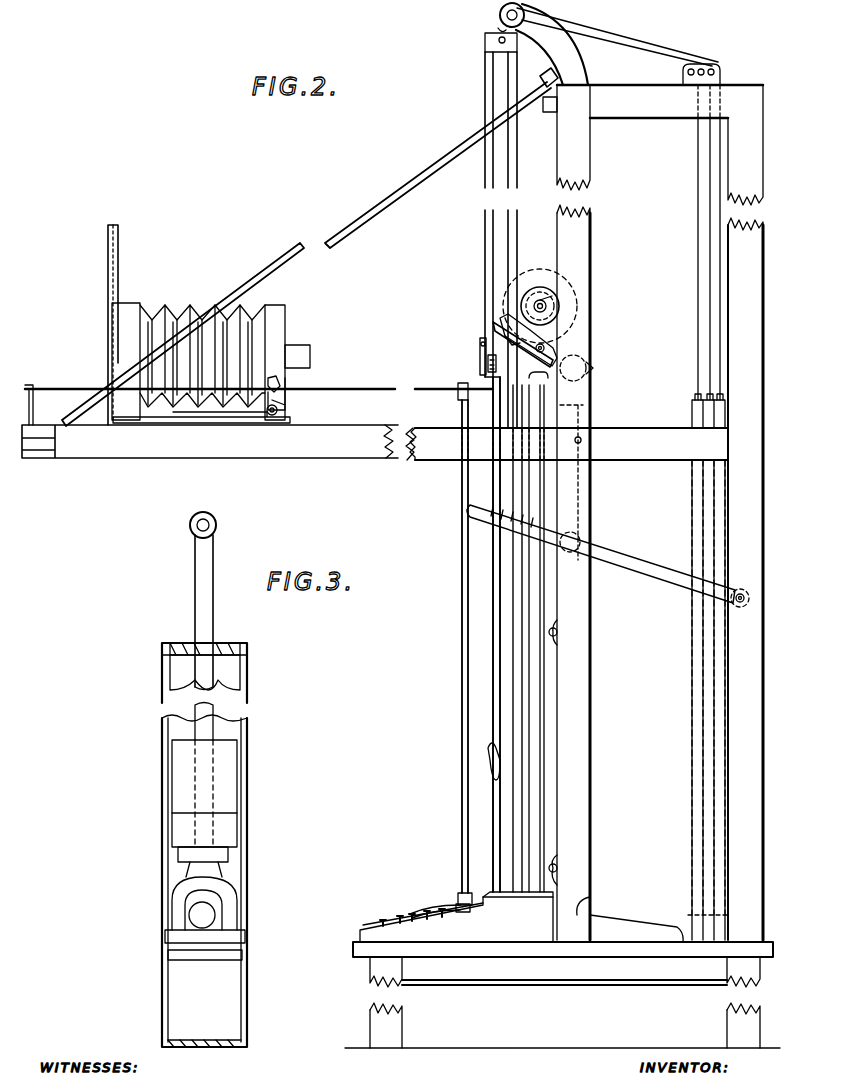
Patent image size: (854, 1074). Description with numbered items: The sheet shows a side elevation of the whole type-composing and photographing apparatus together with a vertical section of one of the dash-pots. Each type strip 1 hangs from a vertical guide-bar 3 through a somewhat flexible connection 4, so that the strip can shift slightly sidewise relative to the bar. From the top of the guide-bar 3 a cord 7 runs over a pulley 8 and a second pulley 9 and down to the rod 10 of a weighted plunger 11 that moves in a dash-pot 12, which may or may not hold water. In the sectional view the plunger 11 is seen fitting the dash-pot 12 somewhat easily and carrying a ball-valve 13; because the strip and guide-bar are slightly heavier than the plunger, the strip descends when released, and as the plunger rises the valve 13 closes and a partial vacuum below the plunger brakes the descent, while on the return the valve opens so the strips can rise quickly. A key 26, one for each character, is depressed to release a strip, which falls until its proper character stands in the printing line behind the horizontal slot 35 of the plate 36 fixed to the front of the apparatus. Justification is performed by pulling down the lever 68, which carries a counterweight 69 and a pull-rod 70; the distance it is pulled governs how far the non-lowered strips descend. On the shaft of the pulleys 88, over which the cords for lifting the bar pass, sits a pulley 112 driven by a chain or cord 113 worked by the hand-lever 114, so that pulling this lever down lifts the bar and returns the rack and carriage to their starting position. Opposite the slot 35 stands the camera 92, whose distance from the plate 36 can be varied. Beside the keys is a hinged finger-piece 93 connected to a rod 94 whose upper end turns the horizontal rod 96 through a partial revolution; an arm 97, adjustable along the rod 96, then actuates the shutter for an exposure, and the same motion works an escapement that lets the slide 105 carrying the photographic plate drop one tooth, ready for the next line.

In FIG. 2, the strip 1 is at (485, 90).
In FIG. 2, the guide-bar 3 is at (310, 247).
In FIG. 2, the connection 4 is at (499, 32).
In FIG. 2, the cord 7 is at (572, 36).
In FIG. 2, the pulley 8 is at (544, 42).
In FIG. 2, the pulley 9 is at (716, 70).
In FIG. 2, the rod 10 is at (692, 402).
In FIG. 3, the rod 10 is at (210, 610).
In FIG. 3, the weighted plunger 11 is at (246, 928).
In FIG. 2, the dash-pot 12 is at (702, 715).
In FIG. 3, the dash-pot 12 is at (242, 765).
In FIG. 3, the ball-valve 13 is at (204, 896).
In FIG. 2, the key 26 is at (400, 915).
In FIG. 2, the slot 35 is at (488, 362).
In FIG. 2, the plate 36 is at (481, 343).
In FIG. 2, the lever 68 is at (494, 327).
In FIG. 2, the counterweight 69 is at (588, 368).
In FIG. 2, the pull-rod 70 is at (493, 613).
In FIG. 2, the pulley 88 is at (540, 294).
In FIG. 2, the camera 92 is at (276, 312).
In FIG. 2, the finger-piece 93 is at (438, 908).
In FIG. 2, the rod 94 is at (462, 760).
In FIG. 2, the horizontal rod 96 is at (258, 396).
In FIG. 2, the arm 97 is at (282, 386).
In FIG. 2, the slide 105 is at (108, 272).
In FIG. 2, the pulley 112 is at (545, 291).
In FIG. 2, the chain or cord 113 is at (584, 405).
In FIG. 2, the hand-lever 114 is at (614, 560).